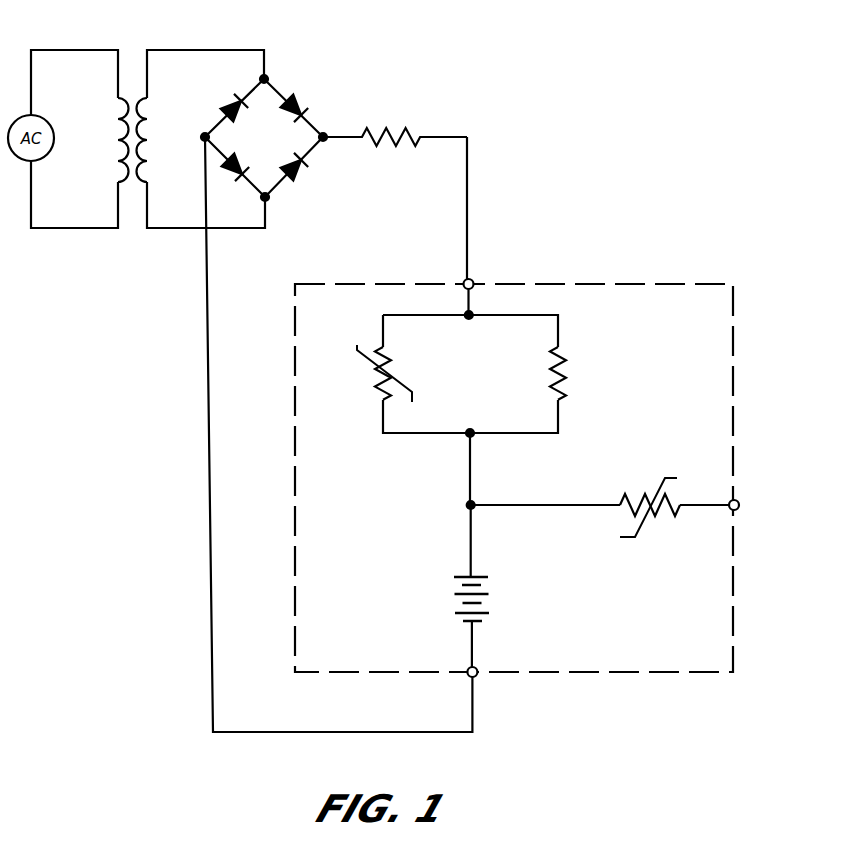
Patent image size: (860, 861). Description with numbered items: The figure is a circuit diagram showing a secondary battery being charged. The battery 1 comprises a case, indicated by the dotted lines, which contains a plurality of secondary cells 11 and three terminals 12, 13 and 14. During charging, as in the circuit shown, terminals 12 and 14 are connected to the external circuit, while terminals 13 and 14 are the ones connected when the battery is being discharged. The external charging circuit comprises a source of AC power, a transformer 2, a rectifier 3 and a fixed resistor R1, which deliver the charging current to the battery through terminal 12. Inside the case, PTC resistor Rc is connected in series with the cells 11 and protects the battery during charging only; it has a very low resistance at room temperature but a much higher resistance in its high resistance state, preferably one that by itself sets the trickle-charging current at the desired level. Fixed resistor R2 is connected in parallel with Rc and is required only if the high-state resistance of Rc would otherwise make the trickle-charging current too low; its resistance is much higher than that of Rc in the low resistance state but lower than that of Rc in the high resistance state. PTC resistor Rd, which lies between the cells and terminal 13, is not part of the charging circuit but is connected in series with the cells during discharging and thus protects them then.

The battery 1 is at (745, 286).
The transformer 2 is at (130, 50).
The rectifier 3 is at (263, 102).
The secondary cells 11 is at (455, 585).
The terminal 12 is at (471, 280).
The terminal 13 is at (740, 501).
The terminal 14 is at (477, 677).
The fixed resistor R1 is at (395, 121).
The fixed resistor R2 is at (574, 373).
The PTC resistor Rc is at (374, 373).
The PTC resistor Rd is at (650, 515).